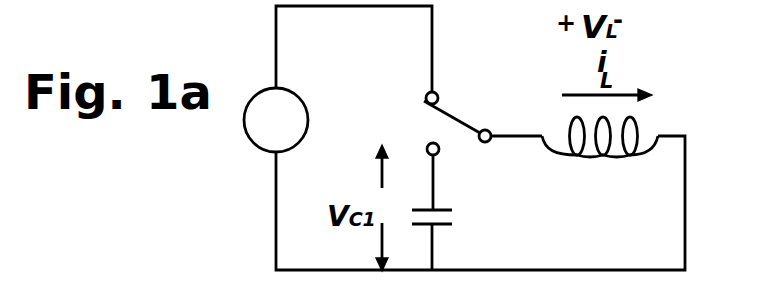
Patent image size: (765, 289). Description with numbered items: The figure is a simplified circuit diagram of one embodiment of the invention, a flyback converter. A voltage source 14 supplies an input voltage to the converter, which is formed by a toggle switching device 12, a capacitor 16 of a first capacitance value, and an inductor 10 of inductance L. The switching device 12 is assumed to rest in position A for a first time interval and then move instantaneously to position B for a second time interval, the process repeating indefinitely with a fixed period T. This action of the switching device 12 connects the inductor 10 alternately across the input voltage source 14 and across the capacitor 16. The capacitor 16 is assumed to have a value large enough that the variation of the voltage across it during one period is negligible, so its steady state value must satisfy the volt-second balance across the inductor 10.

The voltage source 14 is at (258, 72).
The toggle switching device 12 is at (462, 121).
The capacitor 16 is at (446, 197).
The inductor 10 is at (612, 168).